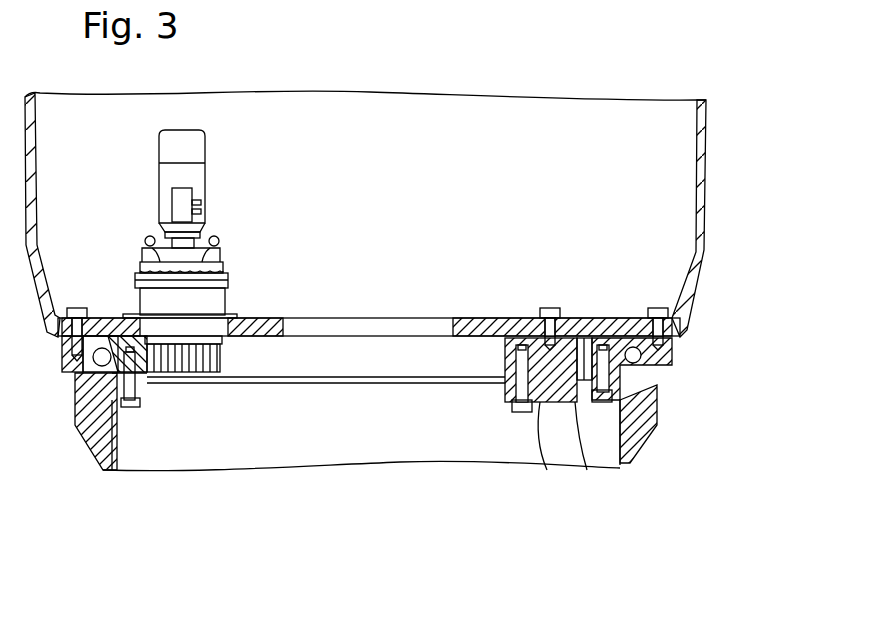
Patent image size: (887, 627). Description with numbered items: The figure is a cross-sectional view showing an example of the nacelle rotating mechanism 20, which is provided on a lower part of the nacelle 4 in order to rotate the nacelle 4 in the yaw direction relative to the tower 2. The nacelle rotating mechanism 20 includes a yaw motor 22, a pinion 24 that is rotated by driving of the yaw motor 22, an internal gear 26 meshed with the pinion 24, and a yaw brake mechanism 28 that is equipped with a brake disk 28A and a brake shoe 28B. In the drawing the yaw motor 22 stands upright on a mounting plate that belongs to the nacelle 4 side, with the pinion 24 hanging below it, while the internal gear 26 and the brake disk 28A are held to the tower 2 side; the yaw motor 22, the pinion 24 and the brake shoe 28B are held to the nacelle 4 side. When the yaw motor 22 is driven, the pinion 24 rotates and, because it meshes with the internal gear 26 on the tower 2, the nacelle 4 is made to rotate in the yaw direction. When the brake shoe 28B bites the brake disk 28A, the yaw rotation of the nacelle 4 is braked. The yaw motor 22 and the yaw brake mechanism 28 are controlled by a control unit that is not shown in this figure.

The tower 2 is at (643, 440).
The nacelle 4 is at (707, 155).
The nacelle rotating mechanism 20 is at (707, 327).
The yaw motor 22 is at (197, 178).
The pinion 24 is at (183, 378).
The internal gear 26 is at (93, 397).
The yaw brake mechanism 28 is at (462, 407).
The brake disk 28A is at (580, 395).
The brake shoe 28B is at (540, 395).